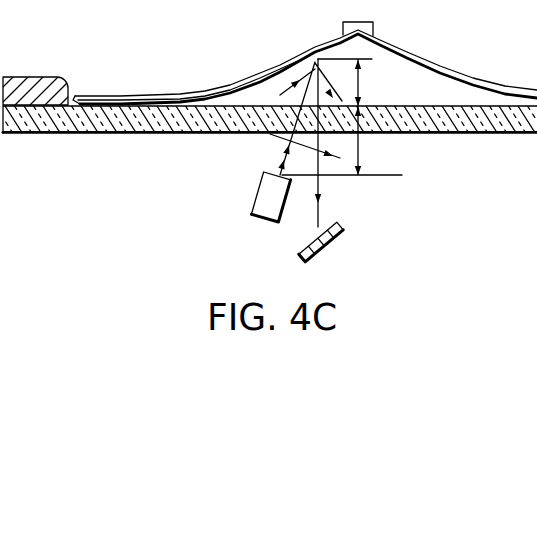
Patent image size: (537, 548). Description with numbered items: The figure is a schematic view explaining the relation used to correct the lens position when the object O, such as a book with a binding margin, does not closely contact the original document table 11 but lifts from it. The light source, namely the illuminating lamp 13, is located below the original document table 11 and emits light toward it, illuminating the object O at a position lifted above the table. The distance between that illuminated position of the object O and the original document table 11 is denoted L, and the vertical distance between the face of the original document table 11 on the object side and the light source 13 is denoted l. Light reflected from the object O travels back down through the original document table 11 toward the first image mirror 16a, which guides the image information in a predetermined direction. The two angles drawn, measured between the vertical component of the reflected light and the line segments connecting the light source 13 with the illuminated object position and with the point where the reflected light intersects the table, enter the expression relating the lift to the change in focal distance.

The original document table 11 is at (105, 125).
The illuminating lamp 13 is at (262, 193).
The first image mirror 16a is at (343, 230).
The original document O is at (412, 54).
The distance between illuminated object position and original document table L is at (360, 84).
The vertical distance between original document table face and light source l is at (360, 152).